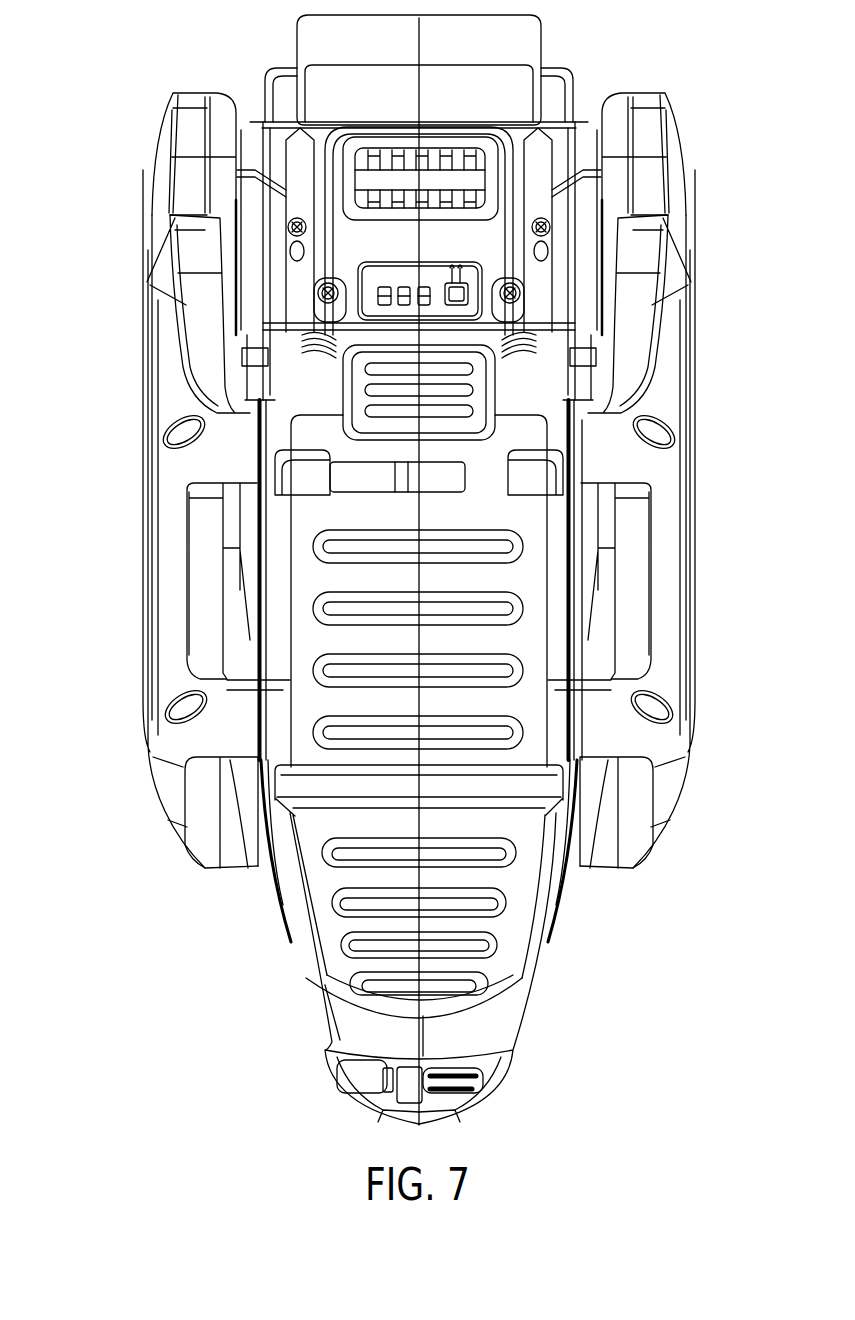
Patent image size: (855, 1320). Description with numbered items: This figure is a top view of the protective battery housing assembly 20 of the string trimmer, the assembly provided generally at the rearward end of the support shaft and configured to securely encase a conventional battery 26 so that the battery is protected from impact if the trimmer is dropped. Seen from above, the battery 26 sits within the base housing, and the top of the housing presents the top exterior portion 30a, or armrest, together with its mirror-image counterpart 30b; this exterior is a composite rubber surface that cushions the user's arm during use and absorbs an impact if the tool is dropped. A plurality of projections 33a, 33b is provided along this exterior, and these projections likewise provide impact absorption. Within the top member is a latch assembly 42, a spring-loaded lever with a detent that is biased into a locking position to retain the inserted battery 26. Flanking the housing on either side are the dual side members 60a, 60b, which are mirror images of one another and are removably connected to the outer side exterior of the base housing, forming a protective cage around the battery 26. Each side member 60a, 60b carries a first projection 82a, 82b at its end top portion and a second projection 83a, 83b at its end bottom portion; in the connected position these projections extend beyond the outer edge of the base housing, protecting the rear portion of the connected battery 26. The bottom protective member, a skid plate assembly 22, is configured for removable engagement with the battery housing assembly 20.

The battery housing assembly 20 is at (114, 603).
The skid plate assembly 22 is at (266, 74).
The battery 26 is at (510, 170).
The top exterior portion 30a is at (308, 874).
The second handle housing half 30b is at (518, 876).
The projections 33a is at (343, 940).
The second grip vent slots 33b is at (503, 938).
The latch assembly 42 is at (440, 377).
The side member 60a is at (146, 506).
The side member 60b is at (692, 486).
The first projection 82a is at (182, 296).
The first projection 82b is at (658, 262).
The second projection 83a is at (167, 124).
The second projection 83b is at (671, 126).